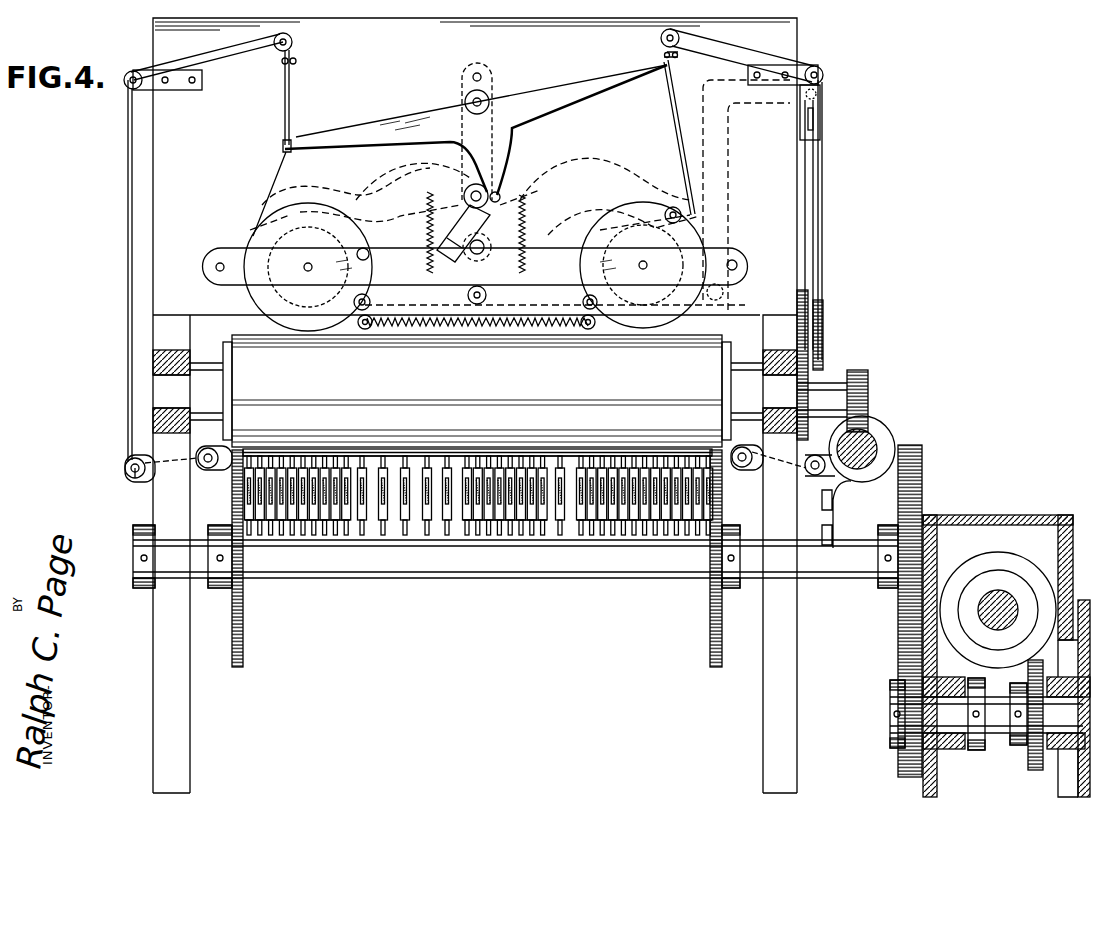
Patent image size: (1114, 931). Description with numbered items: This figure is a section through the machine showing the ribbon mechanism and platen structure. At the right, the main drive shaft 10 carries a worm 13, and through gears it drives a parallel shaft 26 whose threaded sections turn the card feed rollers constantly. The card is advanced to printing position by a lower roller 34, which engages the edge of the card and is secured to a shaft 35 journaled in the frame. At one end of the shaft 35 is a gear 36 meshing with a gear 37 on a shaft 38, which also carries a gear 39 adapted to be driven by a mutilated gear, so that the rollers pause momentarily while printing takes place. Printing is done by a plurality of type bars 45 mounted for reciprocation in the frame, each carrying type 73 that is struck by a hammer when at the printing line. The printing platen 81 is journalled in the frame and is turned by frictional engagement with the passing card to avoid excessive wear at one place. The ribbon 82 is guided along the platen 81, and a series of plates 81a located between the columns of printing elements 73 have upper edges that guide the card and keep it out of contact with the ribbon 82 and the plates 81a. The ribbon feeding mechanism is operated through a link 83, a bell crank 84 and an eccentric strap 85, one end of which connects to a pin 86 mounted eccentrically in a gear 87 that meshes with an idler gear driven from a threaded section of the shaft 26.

The main drive shaft 10 is at (1010, 605).
The worm 13 is at (1002, 563).
The parallel shaft 26 is at (870, 437).
The lower roller 34 is at (240, 618).
The shaft 35 is at (850, 558).
The gear 36 is at (921, 479).
The gear 37 is at (905, 700).
The shaft 38 is at (1000, 715).
The gear 39 is at (1038, 716).
The type bars 45 is at (343, 506).
The type 73 is at (300, 465).
The printing platen 81 is at (441, 352).
The plates 81a is at (337, 465).
The ribbon 82 is at (128, 228).
The link 83 is at (554, 314).
The bell crank 84 is at (727, 182).
The eccentric strap 85 is at (808, 184).
The pin 86 is at (815, 336).
The gear 87 is at (812, 318).